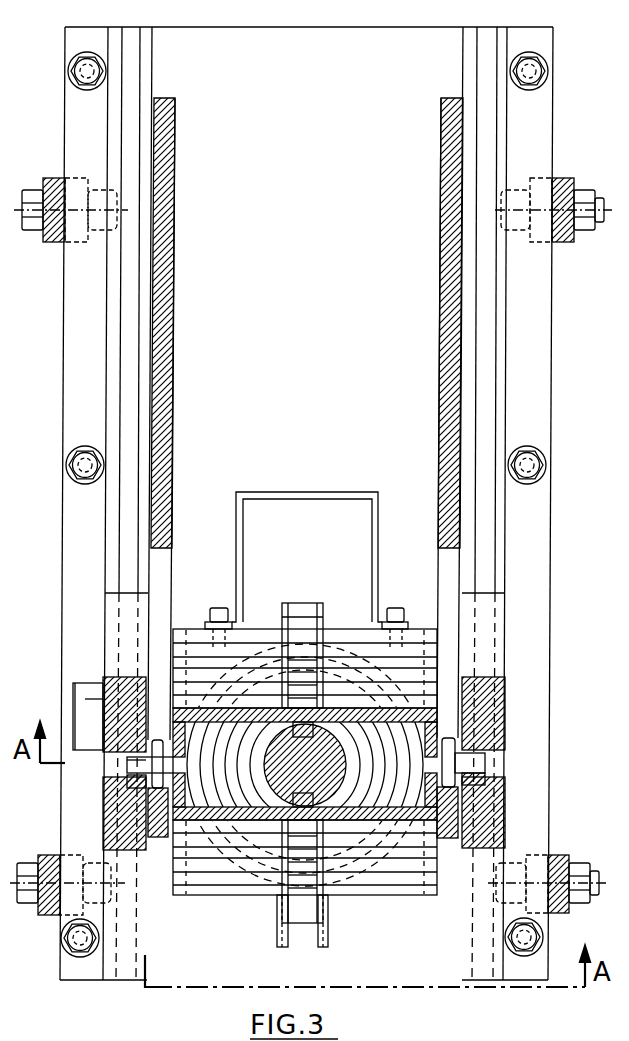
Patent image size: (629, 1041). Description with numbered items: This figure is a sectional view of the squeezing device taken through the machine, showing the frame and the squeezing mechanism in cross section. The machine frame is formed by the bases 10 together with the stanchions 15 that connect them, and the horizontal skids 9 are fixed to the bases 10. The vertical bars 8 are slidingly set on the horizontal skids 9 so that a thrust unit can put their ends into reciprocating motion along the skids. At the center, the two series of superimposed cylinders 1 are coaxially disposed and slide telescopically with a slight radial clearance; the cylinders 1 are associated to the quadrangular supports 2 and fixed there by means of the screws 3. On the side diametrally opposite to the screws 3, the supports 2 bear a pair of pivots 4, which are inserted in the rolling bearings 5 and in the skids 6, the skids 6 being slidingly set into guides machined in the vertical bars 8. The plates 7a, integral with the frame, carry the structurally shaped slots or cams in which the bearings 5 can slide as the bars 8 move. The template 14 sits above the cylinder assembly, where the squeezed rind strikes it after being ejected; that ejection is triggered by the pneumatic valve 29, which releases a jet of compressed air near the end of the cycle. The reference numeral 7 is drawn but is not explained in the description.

The superimposed cylinders 1 is at (305, 765).
The quadrangular supports 2 is at (305, 758).
The screws 3 is at (303, 773).
The pivots 4 is at (556, 748).
The rolling bearings 5 is at (556, 700).
The skids 6 is at (299, 735).
The guide rod 7 is at (168, 552).
The plates 7a is at (307, 323).
The vertical bars 8 is at (296, 734).
The horizontal skids 9 is at (307, 752).
The bases 10 is at (306, 490).
The template 14 is at (307, 533).
The stanchions 15 is at (316, 548).
The pneumatic valve 29 is at (293, 923).